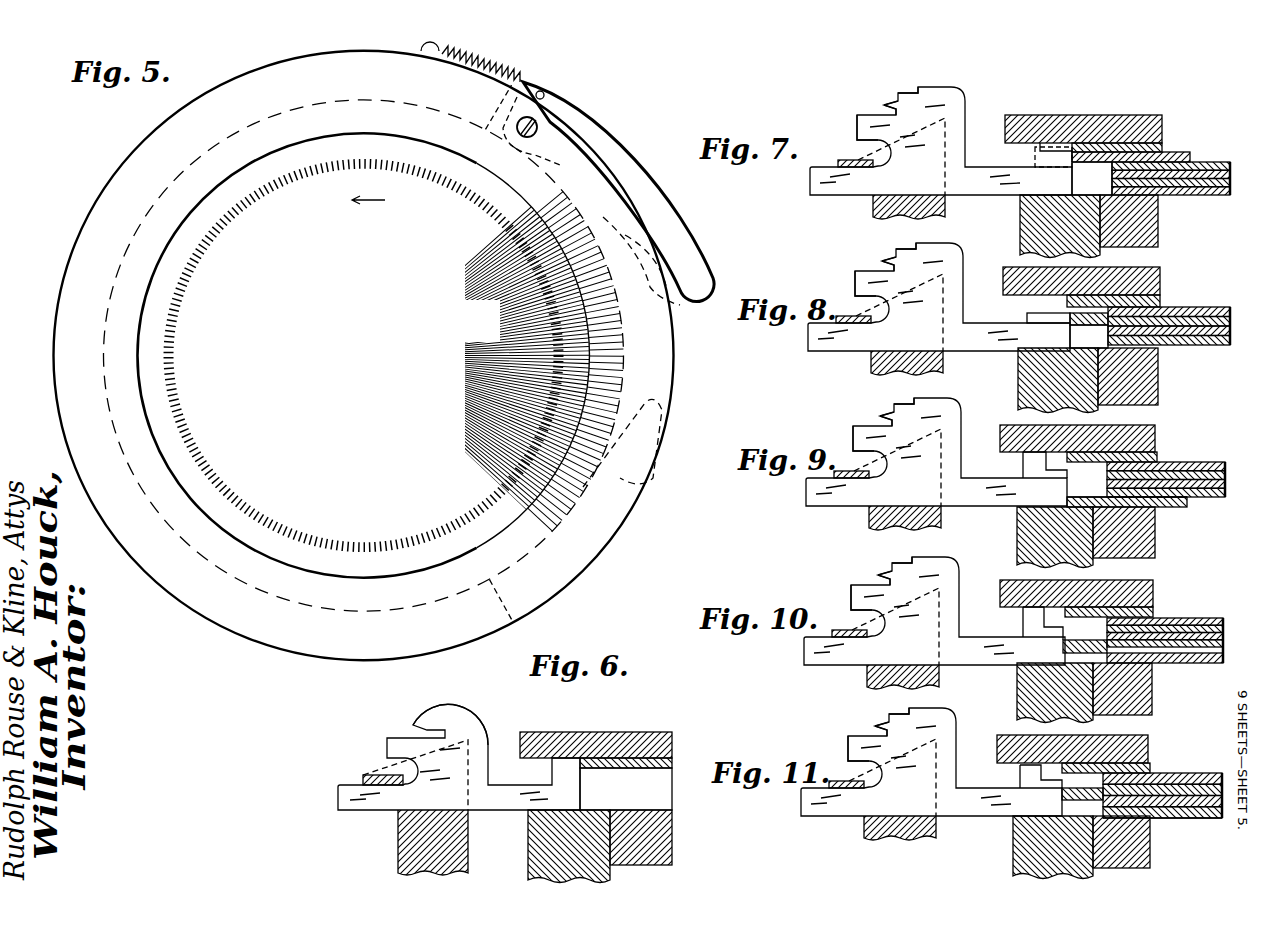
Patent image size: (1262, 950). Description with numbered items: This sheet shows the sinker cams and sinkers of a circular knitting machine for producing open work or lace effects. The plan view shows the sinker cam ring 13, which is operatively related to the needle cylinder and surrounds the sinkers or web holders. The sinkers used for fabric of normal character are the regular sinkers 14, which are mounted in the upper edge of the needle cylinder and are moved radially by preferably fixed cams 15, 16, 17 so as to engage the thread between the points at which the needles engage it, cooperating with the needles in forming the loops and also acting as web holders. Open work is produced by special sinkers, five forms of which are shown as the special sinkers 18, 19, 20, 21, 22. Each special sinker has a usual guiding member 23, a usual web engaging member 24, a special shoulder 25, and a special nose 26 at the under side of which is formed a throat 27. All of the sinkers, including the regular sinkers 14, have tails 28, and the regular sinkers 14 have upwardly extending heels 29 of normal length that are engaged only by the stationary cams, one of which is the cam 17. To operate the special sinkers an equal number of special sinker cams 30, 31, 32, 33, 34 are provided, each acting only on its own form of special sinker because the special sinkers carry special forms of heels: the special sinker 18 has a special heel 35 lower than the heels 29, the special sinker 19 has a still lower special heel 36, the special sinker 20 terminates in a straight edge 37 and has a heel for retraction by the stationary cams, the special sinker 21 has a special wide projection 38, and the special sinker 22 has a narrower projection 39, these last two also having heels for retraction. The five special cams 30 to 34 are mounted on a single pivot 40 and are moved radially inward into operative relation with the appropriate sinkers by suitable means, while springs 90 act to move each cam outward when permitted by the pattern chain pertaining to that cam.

In FIG. 5, the sinker cam ring 13 is at (112, 204).
In FIG. 6, the sinker cam ring 13 is at (660, 735).
In FIG. 7, the sinker cam ring 13 is at (1083, 117).
In FIG. 8, the sinker cam ring 13 is at (1099, 271).
In FIG. 9, the sinker cam ring 13 is at (1096, 434).
In FIG. 10, the sinker cam ring 13 is at (1094, 584).
In FIG. 11, the sinker cam ring 13 is at (1089, 742).
In FIG. 5, the regular sinkers 14 is at (491, 463).
In FIG. 6, the regular sinkers 14 is at (470, 727).
In FIG. 5, the sinker cam 15 is at (688, 314).
In FIG. 5, the sinker cam 16 is at (625, 357).
In FIG. 6, the sinker cam 17 is at (607, 758).
In FIG. 7, the sinker cam 17 is at (1117, 120).
In FIG. 8, the sinker cam 17 is at (1129, 288).
In FIG. 9, the sinker cam 17 is at (1127, 447).
In FIG. 10, the sinker cam 17 is at (1123, 599).
In FIG. 11, the sinker cam 17 is at (1123, 754).
In FIG. 5, the special sinker 18 is at (481, 297).
In FIG. 7, the special sinker 18 is at (890, 205).
In FIG. 8, the special sinker 19 is at (884, 361).
In FIG. 9, the special sinker 20 is at (877, 521).
In FIG. 10, the special sinker 21 is at (877, 674).
In FIG. 11, the special sinker 22 is at (875, 834).
In FIG. 6, the guiding member 23 is at (340, 797).
In FIG. 7, the guiding member 23 is at (921, 141).
In FIG. 8, the guiding member 23 is at (919, 297).
In FIG. 9, the guiding member 23 is at (916, 452).
In FIG. 10, the guiding member 23 is at (914, 611).
In FIG. 11, the guiding member 23 is at (911, 762).
In FIG. 7, the web engaging member 24 is at (846, 127).
In FIG. 8, the web engaging member 24 is at (844, 283).
In FIG. 9, the web engaging member 24 is at (842, 438).
In FIG. 10, the web engaging member 24 is at (840, 597).
In FIG. 11, the web engaging member 24 is at (837, 748).
In FIG. 7, the special shoulder 25 is at (903, 80).
In FIG. 8, the special shoulder 25 is at (901, 236).
In FIG. 9, the special shoulder 25 is at (899, 391).
In FIG. 10, the special shoulder 25 is at (897, 550).
In FIG. 11, the special shoulder 25 is at (894, 701).
In FIG. 7, the special nose 26 is at (879, 91).
In FIG. 8, the special nose 26 is at (877, 247).
In FIG. 9, the special nose 26 is at (875, 402).
In FIG. 10, the special nose 26 is at (873, 561).
In FIG. 11, the special nose 26 is at (870, 712).
In FIG. 7, the throat 27 is at (869, 103).
In FIG. 8, the throat 27 is at (867, 259).
In FIG. 9, the throat 27 is at (865, 414).
In FIG. 10, the throat 27 is at (863, 573).
In FIG. 11, the throat 27 is at (860, 724).
In FIG. 6, the tails 28 is at (515, 797).
In FIG. 7, the tails 28 is at (1067, 220).
In FIG. 8, the tails 28 is at (1066, 376).
In FIG. 9, the tails 28 is at (1082, 531).
In FIG. 10, the tails 28 is at (1064, 681).
In FIG. 11, the tails 28 is at (1063, 833).
In FIG. 6, the heels 29 is at (565, 760).
In FIG. 7, the heels 29 is at (1056, 125).
In FIG. 5, the special sinker cam 30 is at (673, 220).
In FIG. 7, the special sinker cam 30 is at (1133, 137).
In FIG. 8, the special sinker cam 30 is at (1169, 297).
In FIG. 9, the special sinker cam 30 is at (1166, 449).
In FIG. 10, the special sinker cam 30 is at (1165, 603).
In FIG. 11, the special sinker cam 30 is at (1162, 760).
In FIG. 7, the special sinker cam 31 is at (1151, 162).
In FIG. 8, the special sinker cam 31 is at (1150, 348).
In FIG. 9, the special sinker cam 31 is at (1166, 462).
In FIG. 10, the special sinker cam 31 is at (1165, 614).
In FIG. 11, the special sinker cam 31 is at (1162, 774).
In FIG. 7, the special sinker cam 32 is at (1171, 198).
In FIG. 8, the special sinker cam 32 is at (1169, 359).
In FIG. 9, the special sinker cam 32 is at (1127, 528).
In FIG. 10, the special sinker cam 32 is at (1165, 673).
In FIG. 11, the special sinker cam 32 is at (1162, 811).
In FIG. 7, the special sinker cam 33 is at (1171, 211).
In FIG. 8, the special sinker cam 33 is at (1169, 360).
In FIG. 9, the special sinker cam 33 is at (1166, 506).
In FIG. 10, the special sinker cam 33 is at (1165, 660).
In FIG. 11, the special sinker cam 33 is at (1162, 842).
In FIG. 7, the special sinker cam 34 is at (1171, 194).
In FIG. 9, the special sinker cam 34 is at (1166, 504).
In FIG. 10, the special sinker cam 34 is at (1165, 661).
In FIG. 11, the special sinker cam 34 is at (1162, 823).
In FIG. 7, the special heel 35 is at (1030, 157).
In FIG. 8, the special heel 36 is at (1042, 312).
In FIG. 9, the straight edge 37 is at (1027, 465).
In FIG. 10, the wide projection 38 is at (1021, 623).
In FIG. 11, the narrower projection 39 is at (1015, 779).
In FIG. 5, the pivot 40 is at (537, 126).
In FIG. 5, the springs 90 is at (508, 75).